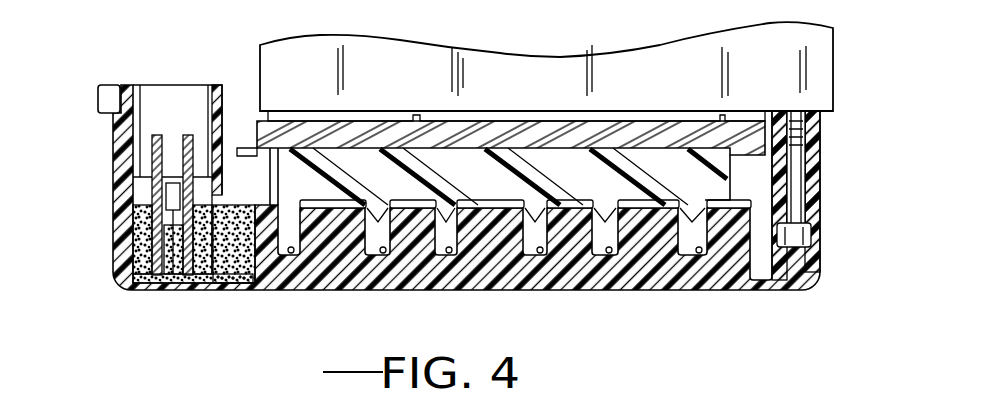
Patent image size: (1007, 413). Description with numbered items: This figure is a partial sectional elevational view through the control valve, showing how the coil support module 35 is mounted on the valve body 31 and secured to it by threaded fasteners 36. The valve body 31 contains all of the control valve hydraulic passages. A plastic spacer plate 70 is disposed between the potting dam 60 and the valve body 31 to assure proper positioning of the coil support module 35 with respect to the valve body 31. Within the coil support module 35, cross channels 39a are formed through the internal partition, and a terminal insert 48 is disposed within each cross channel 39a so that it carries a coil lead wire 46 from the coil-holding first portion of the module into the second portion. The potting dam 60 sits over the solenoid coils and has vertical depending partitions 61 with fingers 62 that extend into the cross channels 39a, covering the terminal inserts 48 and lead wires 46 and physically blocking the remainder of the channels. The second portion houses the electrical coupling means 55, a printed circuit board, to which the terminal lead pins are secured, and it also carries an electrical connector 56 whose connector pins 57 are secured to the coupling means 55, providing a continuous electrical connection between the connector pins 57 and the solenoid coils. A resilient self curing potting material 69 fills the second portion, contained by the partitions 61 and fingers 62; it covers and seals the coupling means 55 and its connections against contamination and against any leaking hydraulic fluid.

The valve body 31 is at (808, 62).
The coil support module 35 is at (818, 170).
The threaded fasteners 36 is at (800, 197).
The cross channels 39a is at (563, 278).
The lead wires 46 is at (612, 252).
The terminal inserts 48 is at (385, 254).
The electrical coupling means 55 is at (212, 268).
The electrical connector 56 is at (108, 100).
The connector pins 57 is at (188, 135).
The potting dam 60 is at (247, 148).
The depending partitions 61 is at (705, 182).
The fingers 62 is at (465, 252).
The potting material 69 is at (112, 256).
The spacer plate 70 is at (747, 150).